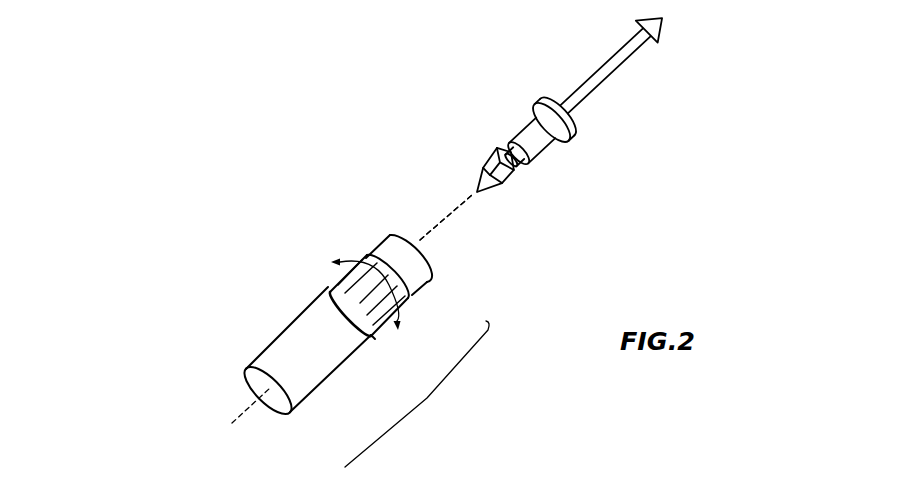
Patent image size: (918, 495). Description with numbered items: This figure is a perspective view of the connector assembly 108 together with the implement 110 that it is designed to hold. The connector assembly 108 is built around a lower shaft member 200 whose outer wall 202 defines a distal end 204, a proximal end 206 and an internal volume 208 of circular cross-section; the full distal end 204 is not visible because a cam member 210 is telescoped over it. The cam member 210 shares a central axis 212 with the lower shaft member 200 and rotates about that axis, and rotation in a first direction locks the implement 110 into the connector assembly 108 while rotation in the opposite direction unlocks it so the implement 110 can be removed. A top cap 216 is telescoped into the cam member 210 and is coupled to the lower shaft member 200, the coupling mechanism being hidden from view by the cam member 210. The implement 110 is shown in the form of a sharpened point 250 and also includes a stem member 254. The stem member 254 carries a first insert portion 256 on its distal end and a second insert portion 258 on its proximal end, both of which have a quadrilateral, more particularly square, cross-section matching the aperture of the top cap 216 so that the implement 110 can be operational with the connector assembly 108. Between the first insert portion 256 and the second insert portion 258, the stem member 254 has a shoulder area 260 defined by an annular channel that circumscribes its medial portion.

The connector assembly 108 is at (427, 398).
The implement 110 is at (585, 164).
The lower shaft member 200 is at (333, 315).
The outer wall 202 is at (248, 354).
The distal end 204 is at (306, 260).
The proximal end 206 is at (229, 375).
The internal volume 208 is at (249, 392).
The cam member 210 is at (376, 357).
The central axis 212 is at (447, 212).
The top cap 216 is at (432, 265).
The sharpened point 250 is at (662, 23).
The stem member 254 is at (462, 165).
The first insert portion 256 is at (508, 187).
The second insert portion 258 is at (548, 152).
The shoulder area 260 is at (489, 135).